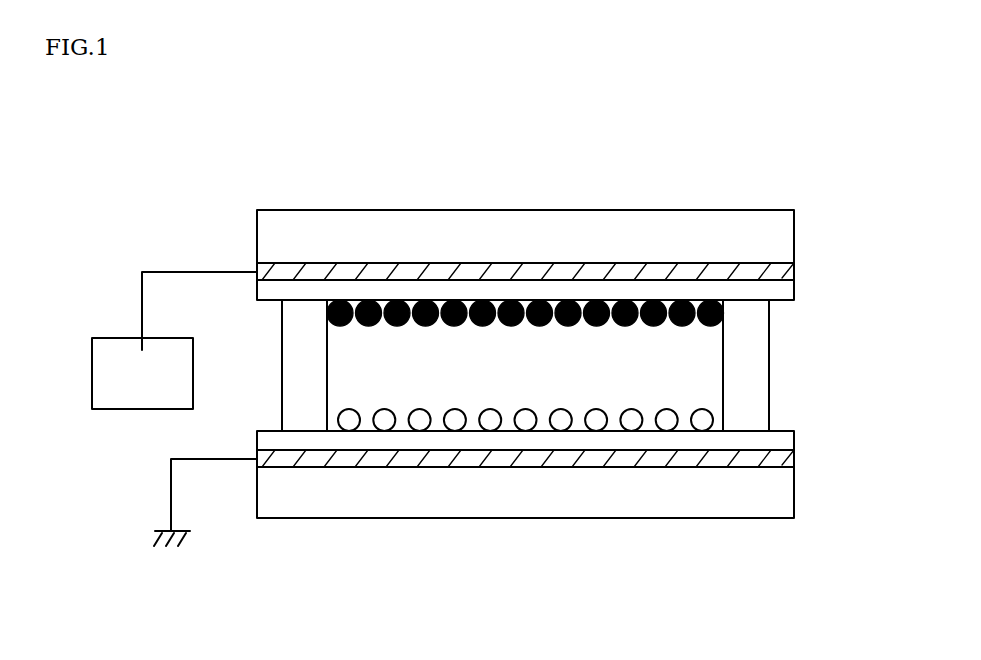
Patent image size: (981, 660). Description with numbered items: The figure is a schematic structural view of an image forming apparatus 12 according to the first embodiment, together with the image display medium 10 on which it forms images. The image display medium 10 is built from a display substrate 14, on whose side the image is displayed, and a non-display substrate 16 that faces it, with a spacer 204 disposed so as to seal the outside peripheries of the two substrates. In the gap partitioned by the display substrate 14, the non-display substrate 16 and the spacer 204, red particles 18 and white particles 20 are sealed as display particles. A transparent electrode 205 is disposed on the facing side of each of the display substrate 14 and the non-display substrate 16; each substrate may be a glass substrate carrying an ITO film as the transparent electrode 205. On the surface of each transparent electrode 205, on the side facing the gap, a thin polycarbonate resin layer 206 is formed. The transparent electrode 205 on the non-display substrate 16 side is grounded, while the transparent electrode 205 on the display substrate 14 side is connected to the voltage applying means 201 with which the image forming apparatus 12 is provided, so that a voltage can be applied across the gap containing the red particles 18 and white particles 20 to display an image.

The image display medium 10 is at (713, 170).
The image forming apparatus 12 is at (167, 322).
The display substrate 14 is at (794, 233).
The non-display substrate 16 is at (788, 495).
The red particles 18 is at (541, 300).
The white particles 20 is at (490, 422).
The voltage applying means 201 is at (100, 410).
The spacer 204 is at (763, 372).
The transparent electrode 205 is at (794, 270).
The polycarbonate resin layer 206 is at (793, 290).